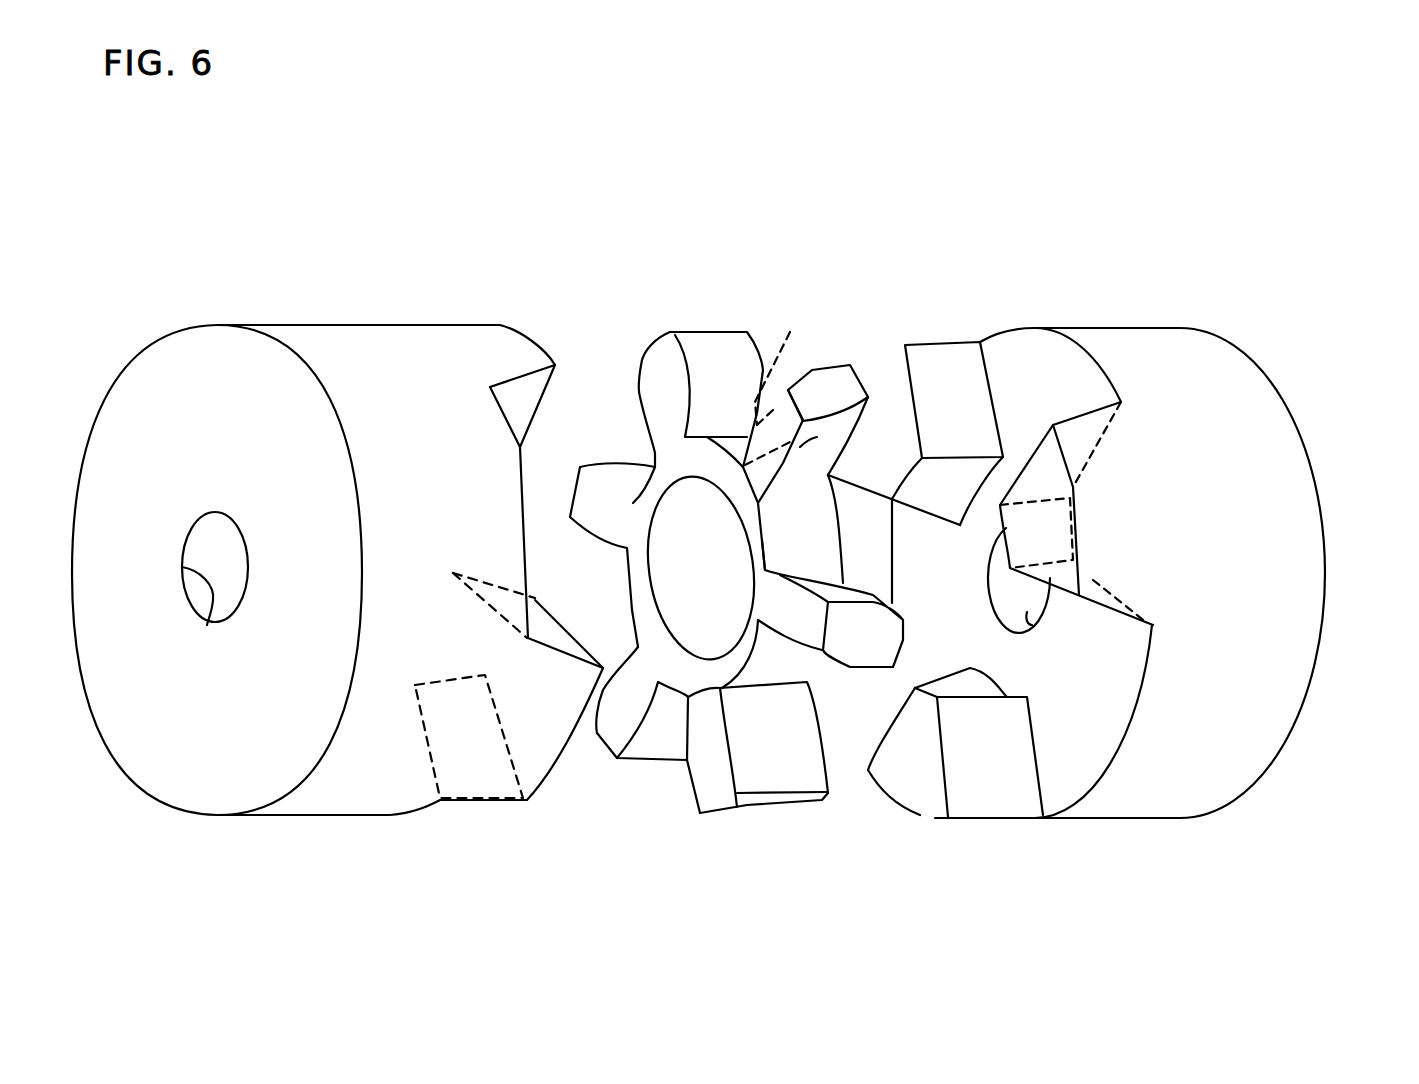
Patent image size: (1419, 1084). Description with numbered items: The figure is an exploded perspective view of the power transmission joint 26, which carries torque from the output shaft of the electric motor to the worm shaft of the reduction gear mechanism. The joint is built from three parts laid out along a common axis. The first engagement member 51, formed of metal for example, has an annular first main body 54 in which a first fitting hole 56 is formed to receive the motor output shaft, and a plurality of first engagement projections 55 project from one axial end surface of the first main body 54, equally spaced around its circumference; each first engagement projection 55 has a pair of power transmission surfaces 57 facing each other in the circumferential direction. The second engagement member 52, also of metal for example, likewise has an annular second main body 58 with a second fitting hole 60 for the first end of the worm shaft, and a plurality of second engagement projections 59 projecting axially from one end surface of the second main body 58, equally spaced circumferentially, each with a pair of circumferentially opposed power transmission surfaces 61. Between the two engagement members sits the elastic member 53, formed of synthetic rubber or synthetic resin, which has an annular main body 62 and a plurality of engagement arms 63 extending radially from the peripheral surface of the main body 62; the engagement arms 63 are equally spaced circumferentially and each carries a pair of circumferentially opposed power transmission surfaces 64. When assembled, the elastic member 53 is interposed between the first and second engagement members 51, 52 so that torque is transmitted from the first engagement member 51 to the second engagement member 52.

The power transmission joint 26 is at (970, 158).
The first engagement member 51 is at (1110, 325).
The second engagement member 52 is at (362, 318).
The elastic member 53 is at (717, 328).
The first main body 54 is at (1272, 680).
The first engagement projections 55 is at (888, 382).
The first fitting hole 56 is at (1032, 625).
The power transmission surfaces 57 is at (935, 380).
The second main body 58 is at (330, 790).
The second engagement projections 59 is at (500, 345).
The second fitting hole 60 is at (207, 625).
The power transmission surfaces 61 is at (560, 388).
The main body 62 is at (723, 470).
The engagement arms 63 is at (662, 347).
The power transmission surfaces 64 is at (625, 475).